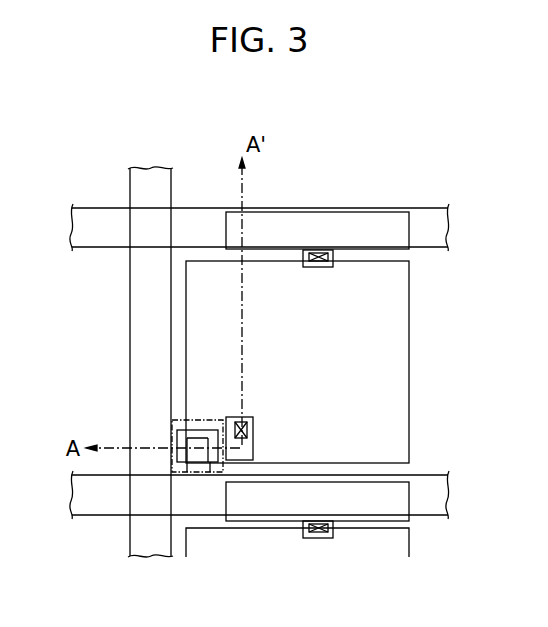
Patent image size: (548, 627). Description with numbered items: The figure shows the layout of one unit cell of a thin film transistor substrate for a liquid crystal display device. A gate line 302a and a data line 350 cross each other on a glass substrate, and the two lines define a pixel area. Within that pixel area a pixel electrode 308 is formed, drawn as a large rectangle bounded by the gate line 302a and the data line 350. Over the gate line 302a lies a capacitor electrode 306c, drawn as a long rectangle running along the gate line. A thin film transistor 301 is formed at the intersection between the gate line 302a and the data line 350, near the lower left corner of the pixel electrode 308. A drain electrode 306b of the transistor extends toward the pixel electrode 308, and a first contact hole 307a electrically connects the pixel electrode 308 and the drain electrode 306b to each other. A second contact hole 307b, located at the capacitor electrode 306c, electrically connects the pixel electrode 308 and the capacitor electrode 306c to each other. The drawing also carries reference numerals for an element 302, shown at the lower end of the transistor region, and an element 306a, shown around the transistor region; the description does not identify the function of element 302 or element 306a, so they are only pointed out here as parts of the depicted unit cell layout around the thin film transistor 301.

The thin film transistor 301 is at (173, 430).
The drain electrode 302 is at (197, 472).
The gate line 302a is at (93, 208).
The pixel electrode contact portion 306a is at (173, 442).
The drain electrode 306b is at (253, 443).
The capacitor electrode 306c is at (369, 213).
The first contact hole 307a is at (248, 425).
The second contact hole 307b is at (317, 268).
The pixel electrode 308 is at (405, 362).
The data line 350 is at (157, 168).